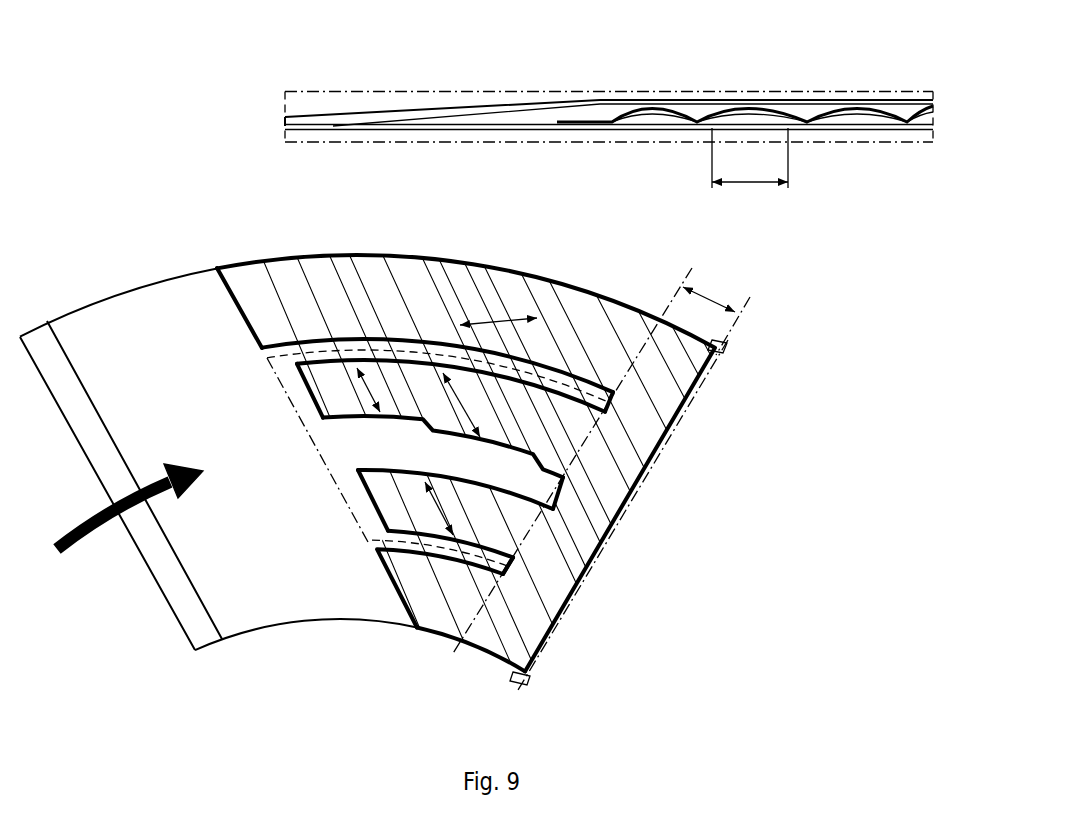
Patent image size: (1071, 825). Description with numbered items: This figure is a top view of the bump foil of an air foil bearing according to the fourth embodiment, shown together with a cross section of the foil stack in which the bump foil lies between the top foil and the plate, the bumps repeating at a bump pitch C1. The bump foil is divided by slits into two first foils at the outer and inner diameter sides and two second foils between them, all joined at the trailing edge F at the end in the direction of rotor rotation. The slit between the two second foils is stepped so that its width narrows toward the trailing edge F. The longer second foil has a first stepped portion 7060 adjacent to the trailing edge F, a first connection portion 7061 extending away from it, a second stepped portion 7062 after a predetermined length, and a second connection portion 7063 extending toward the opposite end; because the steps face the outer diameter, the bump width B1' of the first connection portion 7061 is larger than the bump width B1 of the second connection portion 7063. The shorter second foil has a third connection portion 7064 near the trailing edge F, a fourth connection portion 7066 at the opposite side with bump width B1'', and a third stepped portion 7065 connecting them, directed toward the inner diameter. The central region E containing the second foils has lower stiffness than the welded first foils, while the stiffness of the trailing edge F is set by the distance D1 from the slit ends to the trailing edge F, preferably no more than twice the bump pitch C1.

The first stepped portion 7060 is at (573, 373).
The first connection portion 7061 is at (512, 458).
The second stepped portion 7062 is at (428, 440).
The second connection portion 7063 is at (345, 420).
The third connection portion 7064 is at (480, 615).
The third stepped portion 7065 is at (425, 605).
The fourth connection portion 7066 is at (375, 555).
The bump width of the second connection portion B1 is at (379, 390).
The bump width of the first connection portion B1' is at (471, 405).
The bump width of the fourth connection portion B1'' is at (452, 508).
The bump pitch C1 is at (624, 226).
The distance from slit ends to trailing edge D1 is at (601, 461).
The central region E is at (315, 447).
The trailing edge F is at (722, 352).